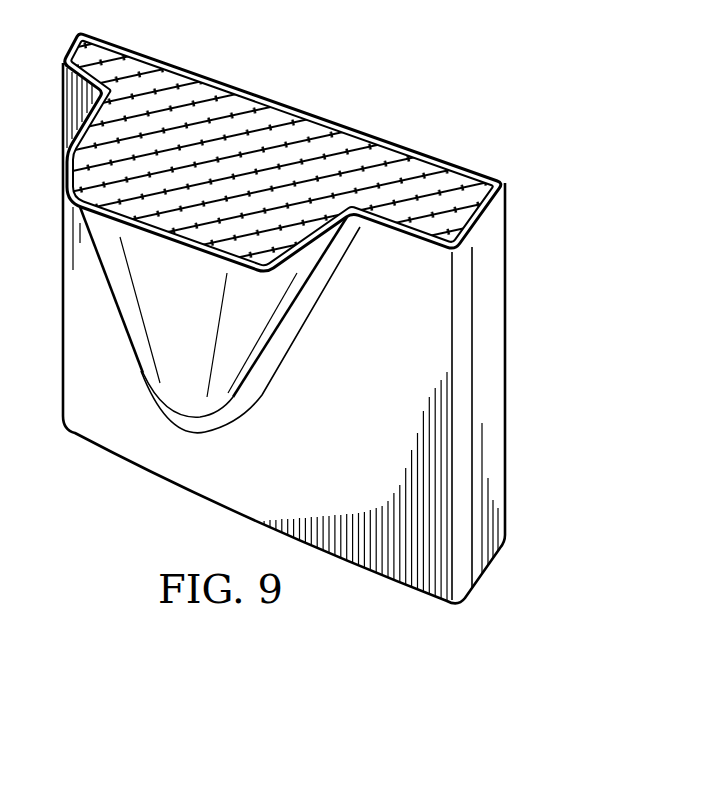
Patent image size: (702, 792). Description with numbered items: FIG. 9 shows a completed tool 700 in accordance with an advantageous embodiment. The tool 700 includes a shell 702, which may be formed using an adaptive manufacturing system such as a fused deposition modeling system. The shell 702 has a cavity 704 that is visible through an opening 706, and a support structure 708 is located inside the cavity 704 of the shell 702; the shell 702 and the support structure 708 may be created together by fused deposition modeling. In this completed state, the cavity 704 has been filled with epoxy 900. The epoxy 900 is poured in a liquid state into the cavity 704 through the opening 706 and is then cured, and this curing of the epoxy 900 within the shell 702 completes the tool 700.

The tool 700 is at (507, 427).
The shell 702 is at (430, 312).
The cavity 704 is at (278, 118).
The opening 706 is at (362, 145).
The support structure 708 is at (281, 143).
The epoxy 900 is at (428, 170).